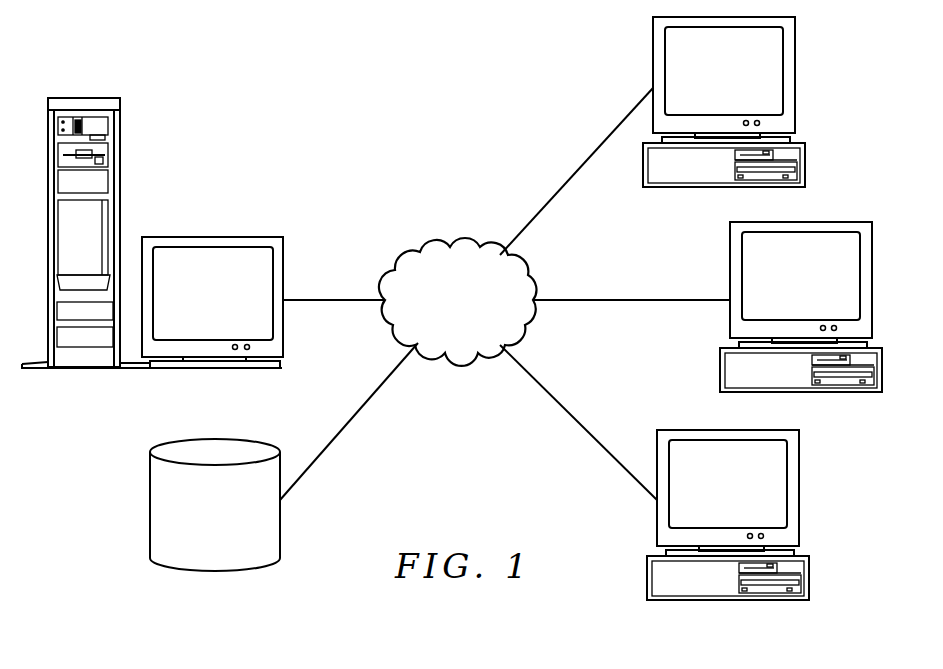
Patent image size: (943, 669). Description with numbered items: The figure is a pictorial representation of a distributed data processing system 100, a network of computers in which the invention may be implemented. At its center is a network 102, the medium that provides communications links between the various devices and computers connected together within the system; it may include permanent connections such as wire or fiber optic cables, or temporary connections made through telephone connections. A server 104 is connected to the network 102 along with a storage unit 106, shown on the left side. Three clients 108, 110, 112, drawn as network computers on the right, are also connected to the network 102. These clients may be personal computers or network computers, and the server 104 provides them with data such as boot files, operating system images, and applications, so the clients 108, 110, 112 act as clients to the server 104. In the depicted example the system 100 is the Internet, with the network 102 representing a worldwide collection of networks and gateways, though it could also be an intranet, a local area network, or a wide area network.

The distributed data processing system 100 is at (349, 62).
The network 102 is at (440, 332).
The server 104 is at (194, 303).
The storage unit 106 is at (194, 527).
The client 108 is at (725, 116).
The client 110 is at (802, 321).
The client 112 is at (729, 529).